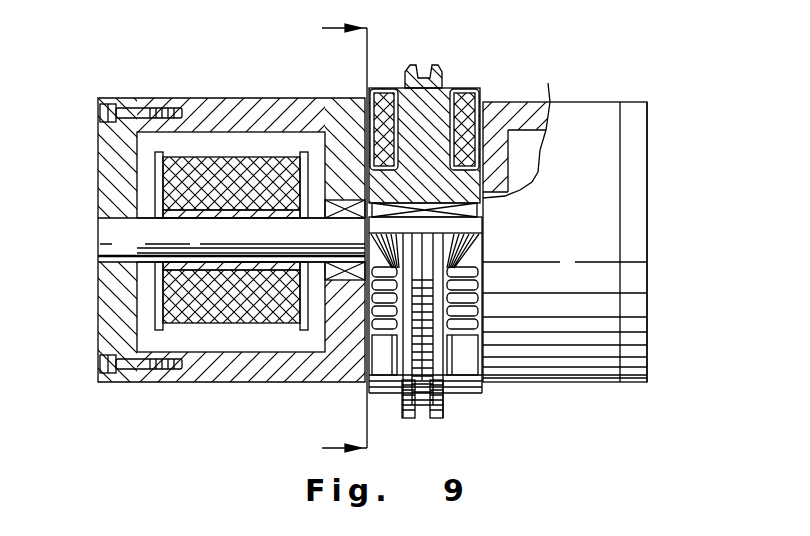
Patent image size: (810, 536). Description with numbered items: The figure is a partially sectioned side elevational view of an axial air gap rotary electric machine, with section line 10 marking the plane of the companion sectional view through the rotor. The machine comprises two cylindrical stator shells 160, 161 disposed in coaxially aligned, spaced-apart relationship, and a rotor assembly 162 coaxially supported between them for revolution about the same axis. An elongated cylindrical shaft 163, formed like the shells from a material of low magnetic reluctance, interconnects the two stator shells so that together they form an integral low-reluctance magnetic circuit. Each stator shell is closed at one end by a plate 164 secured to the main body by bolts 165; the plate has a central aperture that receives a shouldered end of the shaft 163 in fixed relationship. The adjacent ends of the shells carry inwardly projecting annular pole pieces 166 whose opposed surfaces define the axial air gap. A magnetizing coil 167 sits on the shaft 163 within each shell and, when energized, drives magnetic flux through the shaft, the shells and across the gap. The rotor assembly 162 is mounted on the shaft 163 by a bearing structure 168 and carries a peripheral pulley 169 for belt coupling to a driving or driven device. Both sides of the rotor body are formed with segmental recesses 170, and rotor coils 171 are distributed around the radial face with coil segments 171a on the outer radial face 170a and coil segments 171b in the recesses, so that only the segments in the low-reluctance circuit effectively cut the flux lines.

The section line 10- 10 is at (363, 241).
The cylindrical stator shell 160 is at (253, 97).
The cylindrical stator shell 161 is at (585, 382).
The rotor assembly 162 is at (450, 407).
The elongated cylindrical shaft 163 is at (480, 231).
The plate 164 is at (110, 196).
The bolt 165 is at (100, 110).
The pole piece 166 is at (330, 327).
The magnetizing coil 167 is at (180, 305).
The bearing structure 168 is at (485, 213).
The peripheral pulley 169 is at (440, 80).
The segmental recess 170 is at (390, 105).
The outer radial face 170a is at (478, 382).
The rotor coil 171 is at (462, 96).
The coil segment 171a is at (478, 284).
The coil segment 171b is at (478, 308).